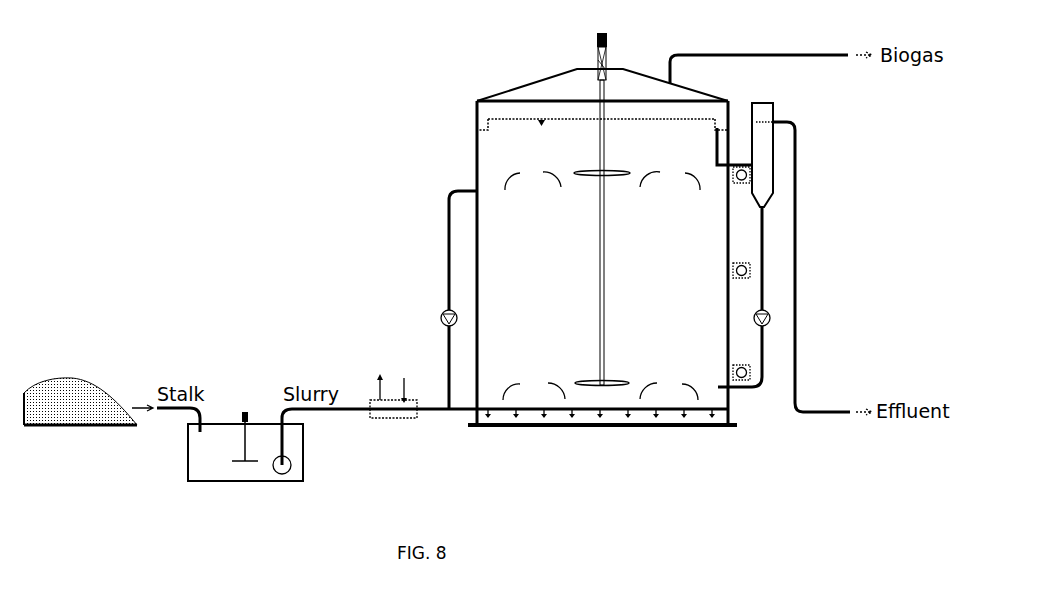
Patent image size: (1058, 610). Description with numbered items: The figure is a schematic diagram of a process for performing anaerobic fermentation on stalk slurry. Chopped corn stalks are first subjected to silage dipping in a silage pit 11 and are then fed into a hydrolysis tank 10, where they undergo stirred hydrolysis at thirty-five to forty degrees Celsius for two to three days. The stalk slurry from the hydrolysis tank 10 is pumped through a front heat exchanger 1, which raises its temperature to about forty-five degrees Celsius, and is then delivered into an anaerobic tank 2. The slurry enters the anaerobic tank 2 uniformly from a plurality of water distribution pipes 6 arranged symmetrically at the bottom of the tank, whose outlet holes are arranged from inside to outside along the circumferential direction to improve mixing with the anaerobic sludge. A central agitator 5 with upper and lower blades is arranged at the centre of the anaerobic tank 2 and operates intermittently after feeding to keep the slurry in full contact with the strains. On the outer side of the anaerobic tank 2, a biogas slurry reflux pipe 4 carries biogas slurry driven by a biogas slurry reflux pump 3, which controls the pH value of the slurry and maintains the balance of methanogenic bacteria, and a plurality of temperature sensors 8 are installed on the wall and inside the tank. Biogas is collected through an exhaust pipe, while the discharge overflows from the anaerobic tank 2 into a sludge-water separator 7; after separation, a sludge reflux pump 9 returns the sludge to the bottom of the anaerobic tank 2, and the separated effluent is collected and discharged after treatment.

The front heat exchanger 1 is at (376, 400).
The anaerobic tank 2 is at (497, 380).
The biogas slurry reflux pump 3 is at (441, 314).
The biogas slurry reflux pipe 4 is at (447, 245).
The central agitator 5 is at (598, 227).
The water distribution pipe 6 is at (533, 410).
The sludge-water separator 7 is at (762, 160).
The temperature sensor 8 is at (750, 265).
The sludge reflux pump 9 is at (767, 320).
The hydrolysis tank 10 is at (222, 464).
The silage pit 11 is at (110, 426).